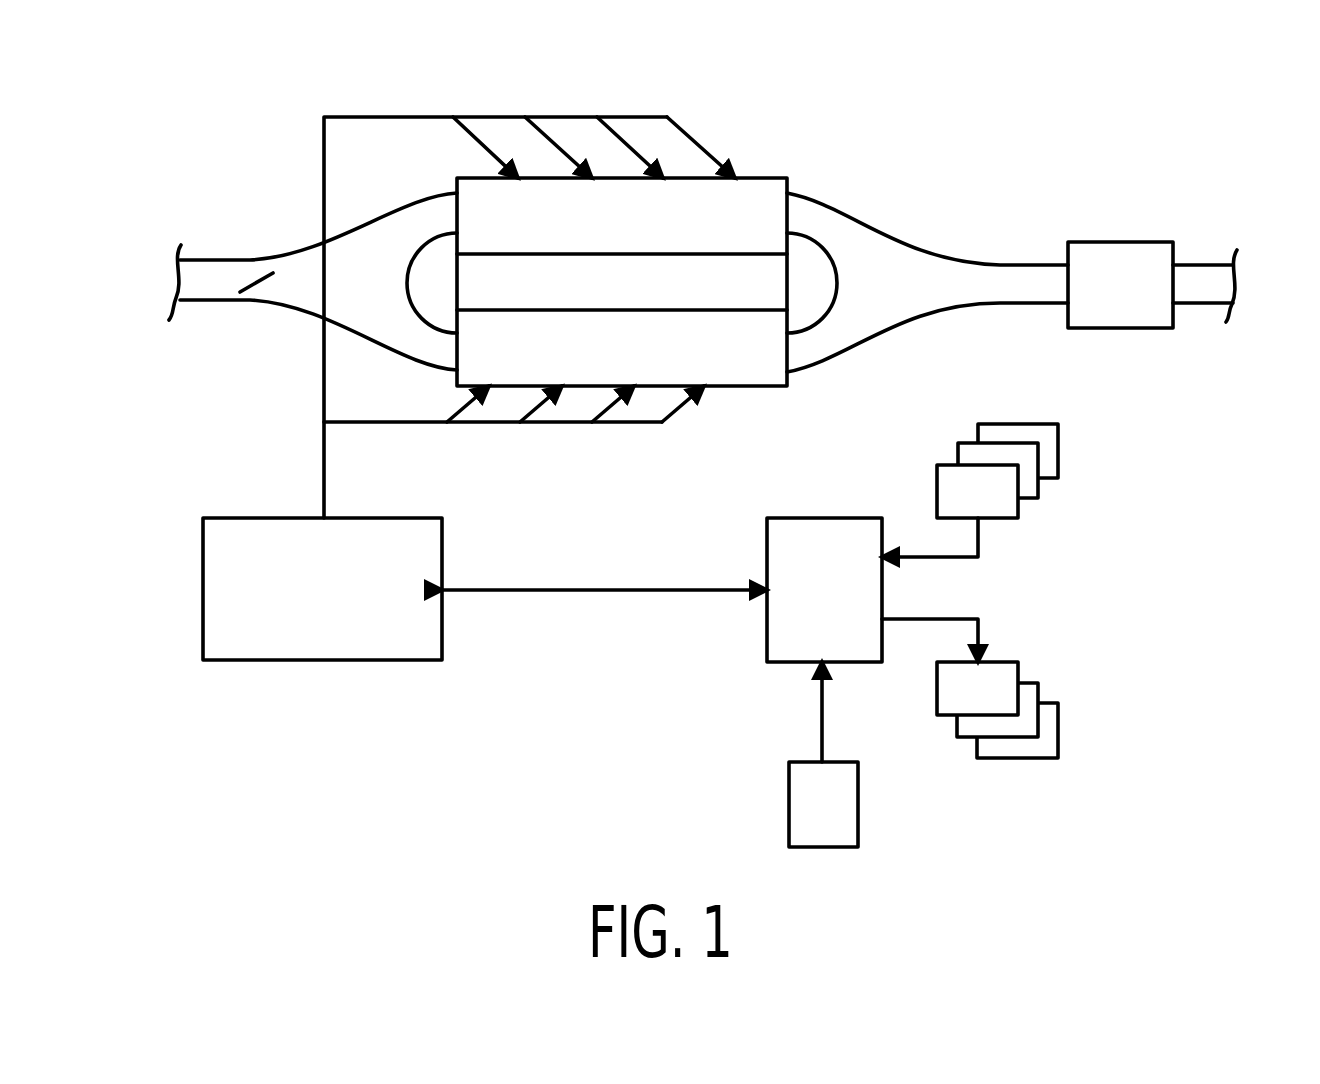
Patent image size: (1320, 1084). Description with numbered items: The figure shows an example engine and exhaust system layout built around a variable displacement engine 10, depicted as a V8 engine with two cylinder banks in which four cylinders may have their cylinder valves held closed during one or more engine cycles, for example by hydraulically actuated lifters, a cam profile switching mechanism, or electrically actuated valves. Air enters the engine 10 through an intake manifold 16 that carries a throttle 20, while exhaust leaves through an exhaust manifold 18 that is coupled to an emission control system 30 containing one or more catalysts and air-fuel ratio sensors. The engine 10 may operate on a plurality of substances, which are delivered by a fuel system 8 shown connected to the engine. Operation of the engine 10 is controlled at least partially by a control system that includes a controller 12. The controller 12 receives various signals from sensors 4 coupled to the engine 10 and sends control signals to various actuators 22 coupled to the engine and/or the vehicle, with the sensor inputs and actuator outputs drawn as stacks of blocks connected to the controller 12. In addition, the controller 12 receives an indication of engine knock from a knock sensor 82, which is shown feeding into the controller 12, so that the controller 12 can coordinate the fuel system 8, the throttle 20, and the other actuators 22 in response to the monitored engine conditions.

The variable displacement engine 10 is at (789, 138).
The intake manifold 16 is at (304, 248).
The exhaust manifold 18 is at (868, 248).
The throttle 20 is at (258, 282).
The emission control system 30 is at (1121, 242).
The fuel system 8 is at (320, 660).
The controller 12 is at (793, 662).
The sensors 4 is at (1060, 447).
The actuators 22 is at (1058, 728).
The knock sensor 82 is at (858, 805).